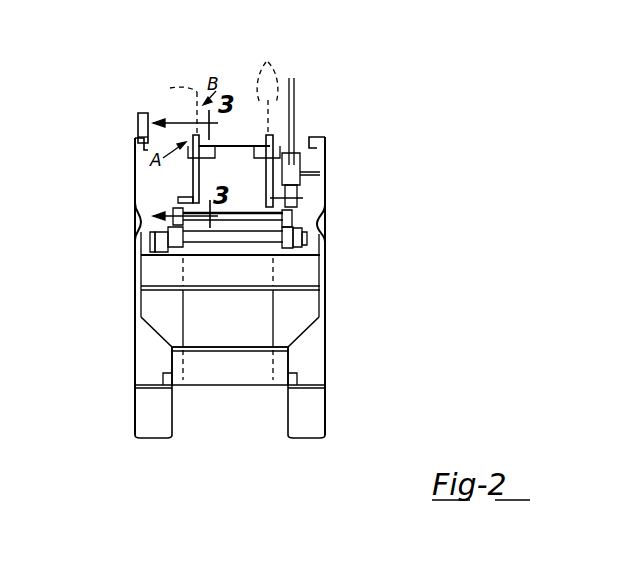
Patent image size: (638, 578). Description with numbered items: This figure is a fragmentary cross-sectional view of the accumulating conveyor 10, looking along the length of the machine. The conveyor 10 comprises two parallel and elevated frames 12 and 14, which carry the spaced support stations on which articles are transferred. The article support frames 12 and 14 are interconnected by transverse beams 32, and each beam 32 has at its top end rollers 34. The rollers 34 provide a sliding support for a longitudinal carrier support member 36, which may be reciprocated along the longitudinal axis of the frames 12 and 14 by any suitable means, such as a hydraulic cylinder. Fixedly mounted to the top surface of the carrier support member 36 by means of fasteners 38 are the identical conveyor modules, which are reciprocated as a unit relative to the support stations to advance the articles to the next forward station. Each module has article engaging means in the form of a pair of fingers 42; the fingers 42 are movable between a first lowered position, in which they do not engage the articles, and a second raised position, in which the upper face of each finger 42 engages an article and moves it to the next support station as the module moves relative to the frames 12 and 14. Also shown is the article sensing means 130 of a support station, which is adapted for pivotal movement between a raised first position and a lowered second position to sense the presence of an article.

The accumulating conveyor 10 is at (378, 400).
The frame 12 is at (135, 207).
The frame 14 is at (322, 216).
The transverse beam 32 is at (226, 290).
The roller 34 is at (300, 240).
The carrier support member 36 is at (170, 210).
The fastener 38 is at (192, 162).
The finger 42 is at (138, 120).
The article sensing means 130 is at (296, 112).